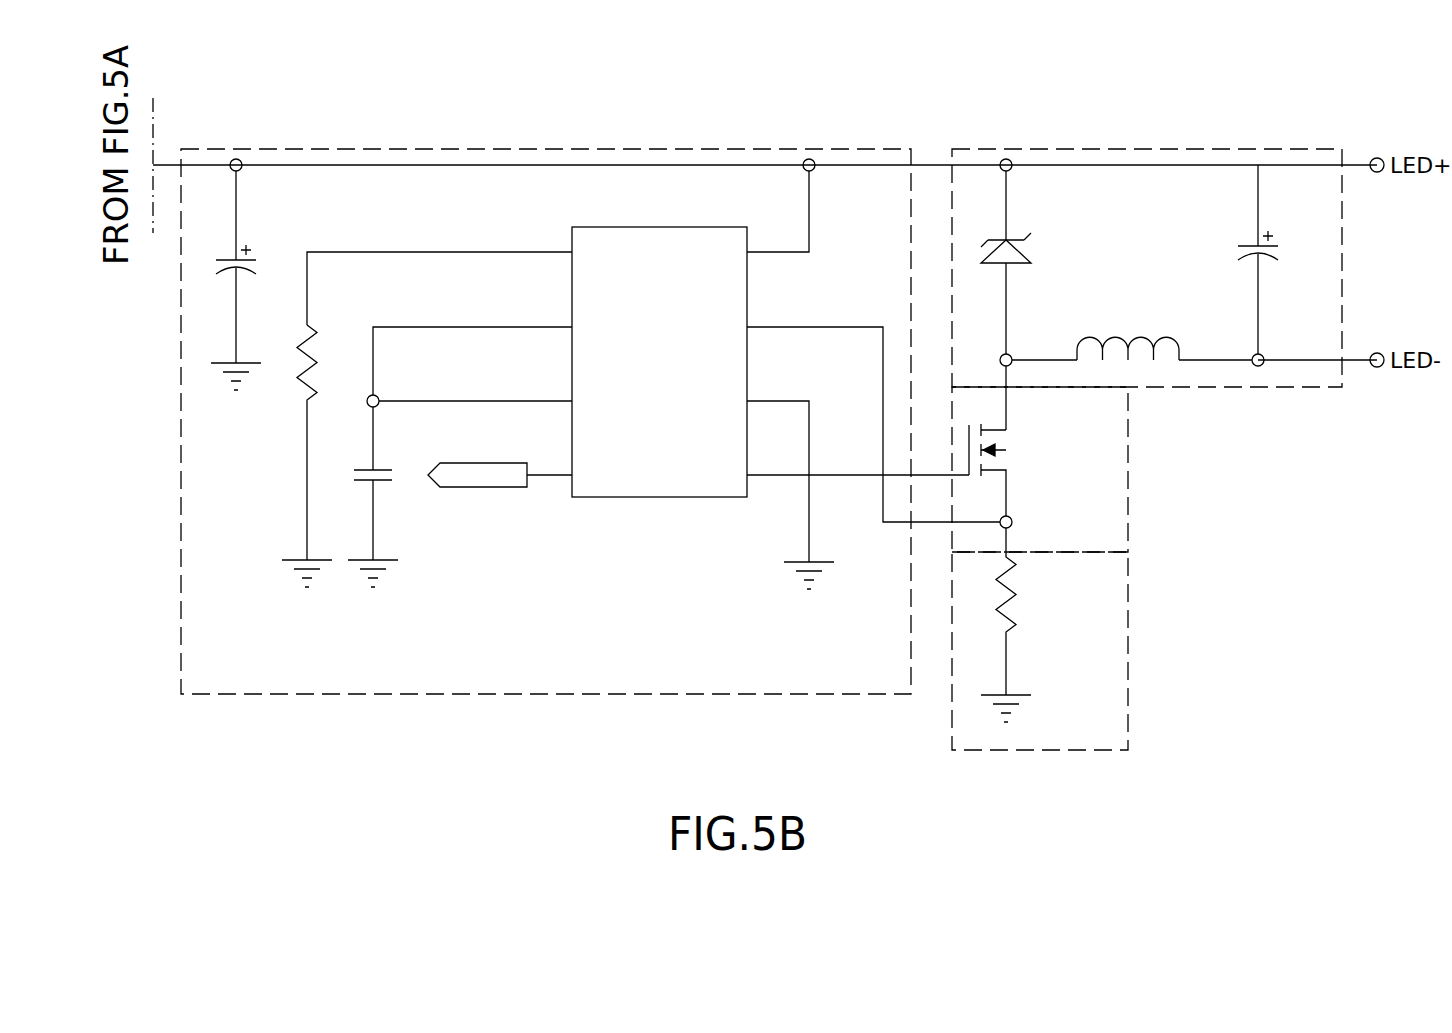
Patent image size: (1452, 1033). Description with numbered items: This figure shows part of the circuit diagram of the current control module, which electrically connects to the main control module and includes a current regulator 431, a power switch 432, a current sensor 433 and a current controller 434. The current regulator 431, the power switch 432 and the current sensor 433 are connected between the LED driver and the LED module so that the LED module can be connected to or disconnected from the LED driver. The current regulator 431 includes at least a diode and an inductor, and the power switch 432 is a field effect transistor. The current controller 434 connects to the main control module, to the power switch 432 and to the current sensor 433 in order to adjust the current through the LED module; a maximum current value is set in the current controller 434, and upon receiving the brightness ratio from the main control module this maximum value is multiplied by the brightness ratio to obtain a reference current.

The current regulator 431 is at (1197, 149).
The power switch 432 is at (1130, 479).
The current sensor 433 is at (1130, 698).
The current controller 434 is at (388, 149).